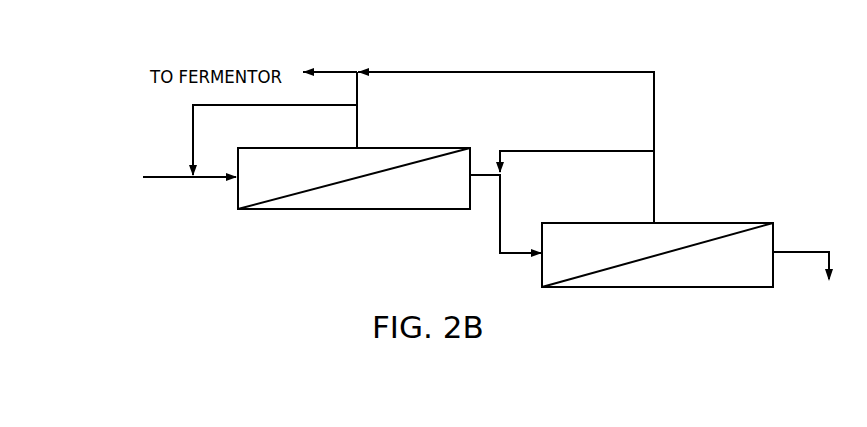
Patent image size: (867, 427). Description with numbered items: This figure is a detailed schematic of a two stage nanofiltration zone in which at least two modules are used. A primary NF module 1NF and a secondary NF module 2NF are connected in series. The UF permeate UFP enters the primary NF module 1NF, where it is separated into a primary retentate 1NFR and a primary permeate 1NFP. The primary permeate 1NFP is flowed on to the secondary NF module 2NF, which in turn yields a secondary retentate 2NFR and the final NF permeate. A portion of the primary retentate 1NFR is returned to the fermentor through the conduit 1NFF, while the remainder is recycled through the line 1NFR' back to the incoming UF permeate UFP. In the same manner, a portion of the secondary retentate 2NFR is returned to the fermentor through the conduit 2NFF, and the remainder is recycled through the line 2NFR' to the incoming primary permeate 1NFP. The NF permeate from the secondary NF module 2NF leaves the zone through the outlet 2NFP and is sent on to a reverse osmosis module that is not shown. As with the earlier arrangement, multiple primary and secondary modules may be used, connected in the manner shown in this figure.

The primary NF module 1NF is at (368, 215).
The conduit 1NFF is at (357, 85).
The primary retentate 1NFR is at (404, 126).
The primary retentate recycle 1NFR' is at (273, 140).
The primary permeate 1NFP is at (498, 227).
The UF permeate UFP is at (212, 179).
The secondary NF module 2NF is at (664, 290).
The conduit 2NFF is at (654, 90).
The secondary retentate 2NFR is at (694, 187).
The secondary retentate recycle 2NFR' is at (575, 135).
The NF permeate outlet 2NFP is at (793, 248).